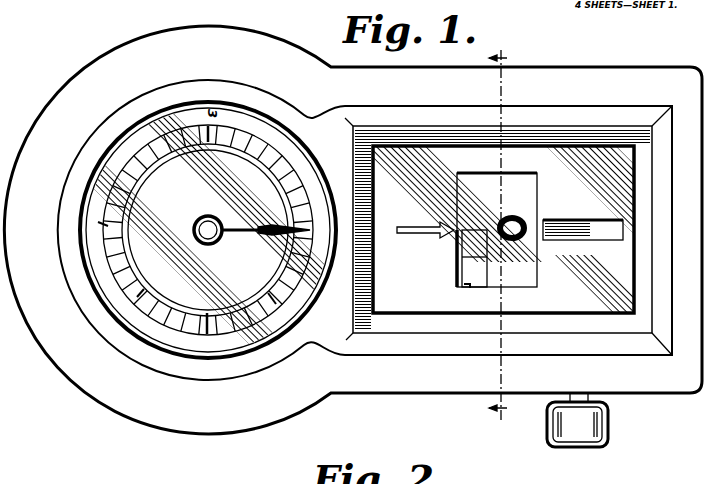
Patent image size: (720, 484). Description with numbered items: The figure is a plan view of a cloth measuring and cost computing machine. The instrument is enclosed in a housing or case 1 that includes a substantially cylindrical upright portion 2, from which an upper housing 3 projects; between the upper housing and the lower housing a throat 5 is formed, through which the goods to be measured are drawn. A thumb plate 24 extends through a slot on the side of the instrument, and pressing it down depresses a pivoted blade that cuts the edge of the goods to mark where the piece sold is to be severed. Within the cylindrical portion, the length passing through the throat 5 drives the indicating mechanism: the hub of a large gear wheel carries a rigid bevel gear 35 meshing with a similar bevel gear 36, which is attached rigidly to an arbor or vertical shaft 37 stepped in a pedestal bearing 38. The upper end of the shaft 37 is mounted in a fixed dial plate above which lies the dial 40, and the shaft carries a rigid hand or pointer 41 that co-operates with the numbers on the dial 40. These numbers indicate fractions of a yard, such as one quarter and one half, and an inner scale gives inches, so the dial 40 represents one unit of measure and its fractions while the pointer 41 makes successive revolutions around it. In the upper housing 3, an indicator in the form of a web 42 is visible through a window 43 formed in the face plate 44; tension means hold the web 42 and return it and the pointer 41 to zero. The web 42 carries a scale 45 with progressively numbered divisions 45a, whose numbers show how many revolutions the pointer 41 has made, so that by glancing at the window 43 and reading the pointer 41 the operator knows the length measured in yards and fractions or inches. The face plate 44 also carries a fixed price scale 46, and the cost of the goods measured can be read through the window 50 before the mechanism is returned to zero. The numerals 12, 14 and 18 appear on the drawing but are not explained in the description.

The housing or case 1 is at (356, 386).
The cylindrical upright portion 2 is at (115, 402).
The upper housing 3 is at (644, 385).
The throat 5 is at (509, 232).
The index mark 12 is at (96, 232).
The index mark 14 is at (202, 333).
The index mark 18 is at (281, 308).
The thumb plate 24 is at (584, 432).
The bevel gear 35 is at (200, 129).
The bevel gear 36 is at (140, 160).
The arbor or vertical shaft 37 is at (211, 219).
The pedestal bearing 38 is at (133, 302).
The dial 40 is at (212, 230).
The hand or pointer 41 is at (282, 235).
The web 42 is at (497, 230).
The window 43 is at (456, 200).
The face plate 44 is at (442, 258).
The scale 45 is at (456, 272).
The divisions 45a is at (468, 289).
The fixed price scale 46 is at (577, 196).
The window 50 is at (583, 242).